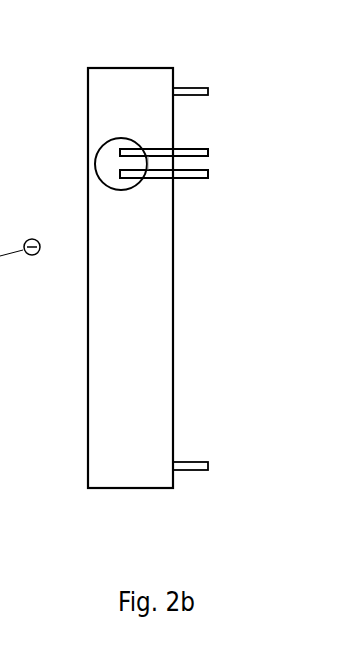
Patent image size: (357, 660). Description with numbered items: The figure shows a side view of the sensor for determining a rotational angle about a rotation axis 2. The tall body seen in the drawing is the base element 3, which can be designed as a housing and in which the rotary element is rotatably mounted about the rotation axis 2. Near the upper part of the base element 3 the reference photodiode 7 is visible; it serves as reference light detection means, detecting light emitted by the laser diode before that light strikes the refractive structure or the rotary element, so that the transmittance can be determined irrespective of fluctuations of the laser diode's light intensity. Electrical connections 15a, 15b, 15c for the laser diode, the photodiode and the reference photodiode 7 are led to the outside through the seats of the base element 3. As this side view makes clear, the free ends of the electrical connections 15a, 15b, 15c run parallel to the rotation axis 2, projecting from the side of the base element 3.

The rotation axis 2 is at (186, 277).
The base element 3 is at (107, 208).
The reference photodiode 7 is at (93, 148).
The electrical connection 15a is at (181, 84).
The electrical connection 15b is at (181, 460).
The electrical connection 15c is at (207, 151).